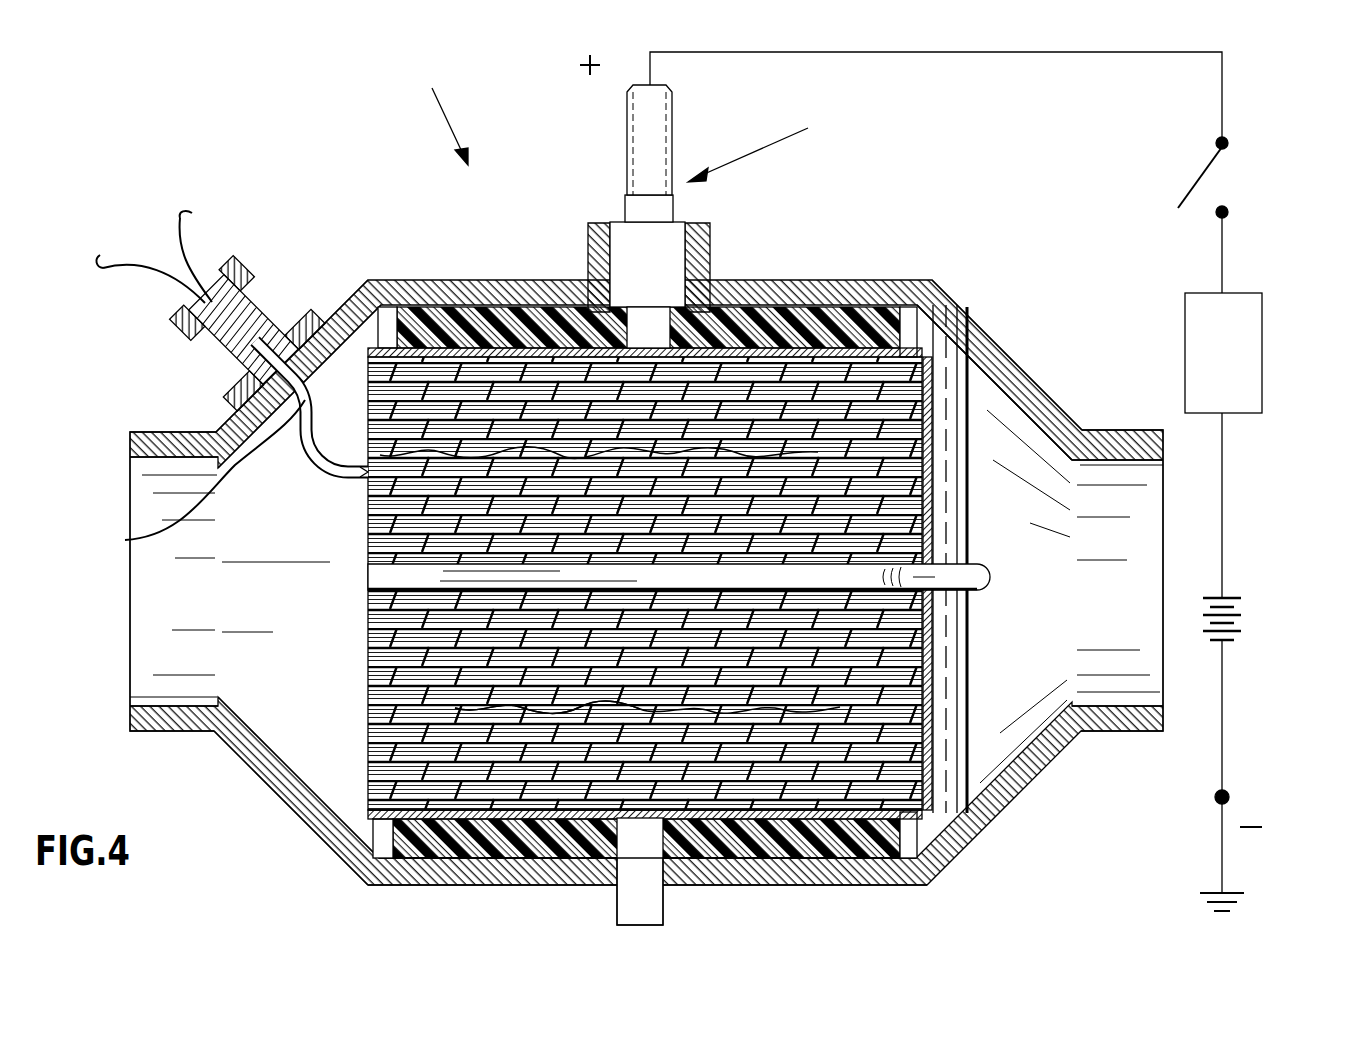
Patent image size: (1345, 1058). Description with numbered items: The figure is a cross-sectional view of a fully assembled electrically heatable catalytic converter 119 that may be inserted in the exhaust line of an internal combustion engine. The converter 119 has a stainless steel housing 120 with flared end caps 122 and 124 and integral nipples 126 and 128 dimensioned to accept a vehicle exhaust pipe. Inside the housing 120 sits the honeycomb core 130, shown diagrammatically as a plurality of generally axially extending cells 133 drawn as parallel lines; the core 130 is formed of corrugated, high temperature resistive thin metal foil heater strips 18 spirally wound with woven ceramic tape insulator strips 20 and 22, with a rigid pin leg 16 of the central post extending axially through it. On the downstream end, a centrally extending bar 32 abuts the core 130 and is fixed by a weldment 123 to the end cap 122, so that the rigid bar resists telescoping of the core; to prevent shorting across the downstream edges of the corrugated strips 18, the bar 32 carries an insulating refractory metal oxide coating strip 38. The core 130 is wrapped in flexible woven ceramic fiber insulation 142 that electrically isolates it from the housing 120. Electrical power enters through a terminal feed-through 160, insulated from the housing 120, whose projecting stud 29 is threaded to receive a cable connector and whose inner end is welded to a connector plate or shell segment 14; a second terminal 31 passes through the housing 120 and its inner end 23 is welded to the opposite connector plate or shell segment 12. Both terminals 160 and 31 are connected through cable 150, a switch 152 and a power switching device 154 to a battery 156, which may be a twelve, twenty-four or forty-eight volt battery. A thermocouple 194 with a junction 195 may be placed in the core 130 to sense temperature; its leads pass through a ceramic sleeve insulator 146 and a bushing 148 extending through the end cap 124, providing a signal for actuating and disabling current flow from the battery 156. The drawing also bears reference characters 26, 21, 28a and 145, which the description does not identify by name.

The electrically heatable catalytic converter 119 is at (429, 111).
The housing 120 is at (420, 292).
The end cap 122 is at (977, 333).
The weldment 123 is at (998, 389).
The nipple 126 is at (1127, 445).
The nipple 128 is at (172, 430).
The end cap 124 is at (232, 426).
The honeycomb core 130 is at (368, 692).
The bottom housing wall 26 is at (372, 853).
The insulation 142 is at (741, 315).
The connector plate 14 is at (803, 348).
The heater strips 18 is at (510, 733).
The cells 133 is at (390, 771).
The insulator strip 20 is at (818, 452).
The insulator strip 22 is at (745, 715).
The refractory metal oxide coating strip 38 is at (932, 531).
The bar 32 is at (947, 670).
The pin leg 16 is at (370, 623).
The electrode connector block 28a is at (680, 220).
The projecting stud 29 is at (675, 130).
The electrical terminal 160 is at (772, 145).
The upper post 21 is at (656, 348).
The inner end of terminal 23 is at (636, 826).
The terminal 31 is at (655, 903).
The connector plate 12 is at (852, 838).
The cable 150 is at (985, 55).
The switch 152 is at (1197, 180).
The power switching device 154 is at (1245, 343).
The battery 156 is at (1233, 617).
The inlet fitting 145 is at (205, 300).
The insulator 146 is at (262, 302).
The bushing 148 is at (317, 318).
The thermocouple 194 is at (125, 540).
The junction 195 is at (380, 448).